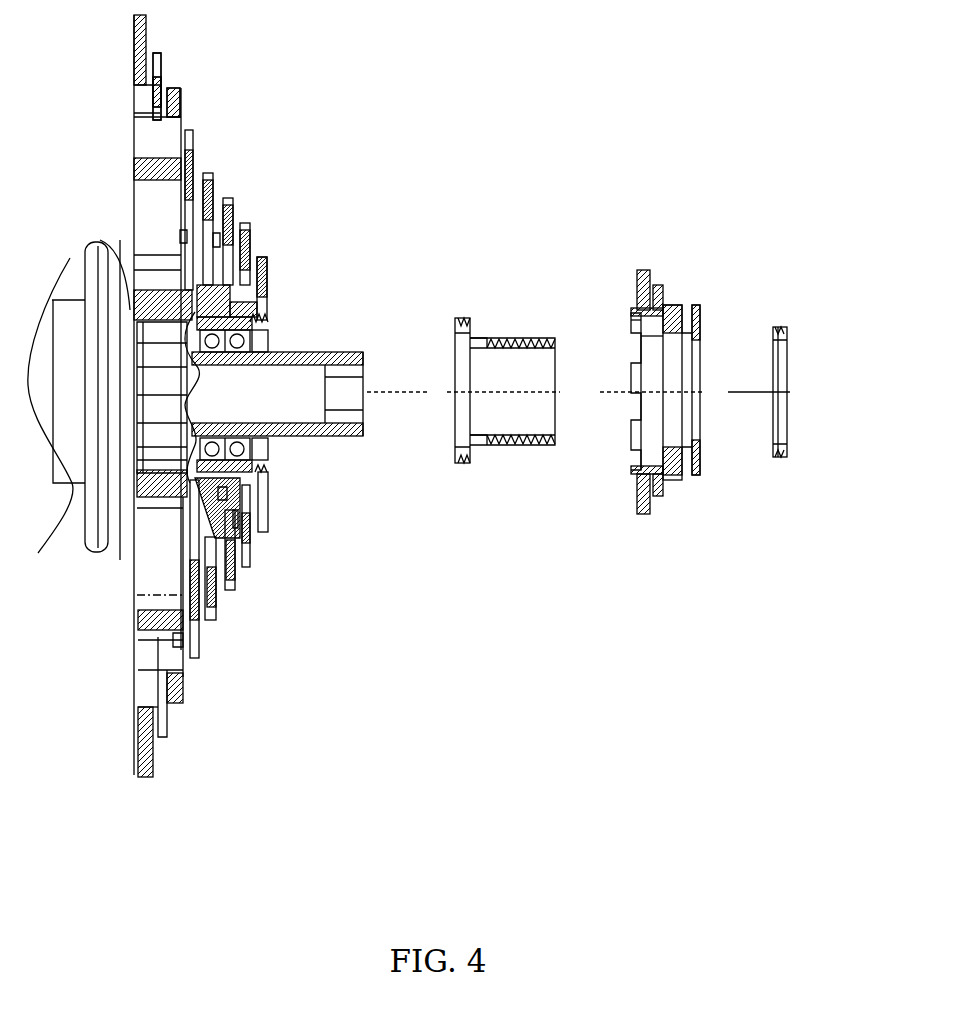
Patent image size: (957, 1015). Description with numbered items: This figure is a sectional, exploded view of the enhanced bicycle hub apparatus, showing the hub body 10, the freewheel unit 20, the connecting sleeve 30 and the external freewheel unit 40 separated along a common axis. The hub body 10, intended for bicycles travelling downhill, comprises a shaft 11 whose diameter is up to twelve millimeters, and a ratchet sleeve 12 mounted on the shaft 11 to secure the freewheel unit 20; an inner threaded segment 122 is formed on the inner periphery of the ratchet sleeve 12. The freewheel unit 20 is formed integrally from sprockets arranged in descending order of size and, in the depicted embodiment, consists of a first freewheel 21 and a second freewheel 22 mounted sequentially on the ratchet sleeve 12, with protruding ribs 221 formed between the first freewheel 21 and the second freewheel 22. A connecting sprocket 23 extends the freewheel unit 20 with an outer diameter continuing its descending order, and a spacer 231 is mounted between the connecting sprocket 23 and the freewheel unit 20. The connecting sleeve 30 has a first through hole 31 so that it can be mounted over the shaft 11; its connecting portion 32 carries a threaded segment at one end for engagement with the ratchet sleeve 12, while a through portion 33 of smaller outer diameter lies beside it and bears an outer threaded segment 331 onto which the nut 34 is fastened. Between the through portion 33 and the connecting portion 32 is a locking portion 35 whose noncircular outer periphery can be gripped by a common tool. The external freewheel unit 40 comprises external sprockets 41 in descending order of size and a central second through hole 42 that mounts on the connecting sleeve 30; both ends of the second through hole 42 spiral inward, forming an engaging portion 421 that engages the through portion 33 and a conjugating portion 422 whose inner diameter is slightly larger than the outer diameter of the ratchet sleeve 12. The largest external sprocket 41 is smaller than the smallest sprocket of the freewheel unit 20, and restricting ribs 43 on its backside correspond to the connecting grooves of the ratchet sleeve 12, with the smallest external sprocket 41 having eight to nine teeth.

The hub body 10 is at (91, 600).
The shaft 11 is at (313, 352).
The ratchet sleeve 12 is at (268, 472).
The inner threaded segment 122 is at (270, 460).
The freewheel unit 20 is at (214, 103).
The first freewheel 21 is at (153, 103).
The second freewheel 22 is at (192, 203).
The connecting sprocket 23 is at (259, 270).
The protruding ribs 221 is at (123, 262).
The spacer 231 is at (253, 309).
The connecting sleeve 30 is at (523, 382).
The first through hole 31 is at (537, 418).
The connecting portion 32 is at (462, 320).
The through portion 33 is at (505, 338).
The outer threaded segment 331 is at (527, 447).
The nut 34 is at (782, 328).
The locking portion 35 is at (482, 447).
The external freewheel unit 40 is at (671, 373).
The external sprockets 41 is at (658, 285).
The second through hole 42 is at (653, 367).
The engaging portion 421 is at (663, 336).
The conjugating portion 422 is at (640, 320).
The restricting ribs 43 is at (633, 313).